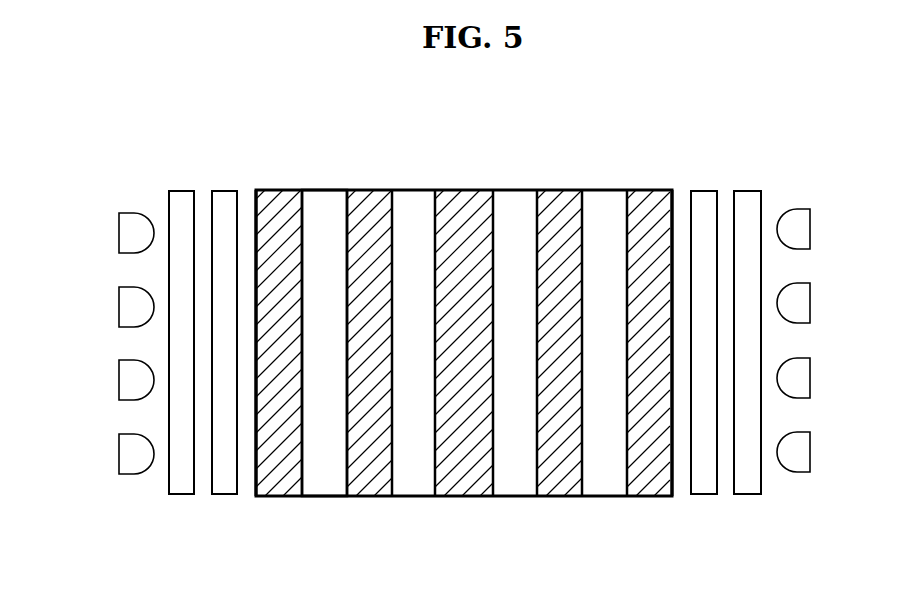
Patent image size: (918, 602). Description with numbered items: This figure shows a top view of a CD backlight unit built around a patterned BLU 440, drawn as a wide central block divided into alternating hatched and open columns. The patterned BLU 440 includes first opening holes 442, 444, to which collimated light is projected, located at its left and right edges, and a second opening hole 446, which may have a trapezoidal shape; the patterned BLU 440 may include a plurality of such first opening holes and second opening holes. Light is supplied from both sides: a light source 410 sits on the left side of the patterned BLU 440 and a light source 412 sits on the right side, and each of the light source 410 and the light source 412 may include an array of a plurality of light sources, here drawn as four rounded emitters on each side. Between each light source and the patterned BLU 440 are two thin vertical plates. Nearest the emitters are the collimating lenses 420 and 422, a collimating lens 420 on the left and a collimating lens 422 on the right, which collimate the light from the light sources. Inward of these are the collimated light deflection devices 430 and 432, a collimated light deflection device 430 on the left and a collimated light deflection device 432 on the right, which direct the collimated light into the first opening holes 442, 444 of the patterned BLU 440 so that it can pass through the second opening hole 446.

The light source 410 is at (119, 233).
The light source 412 is at (810, 228).
The collimating lens 420 is at (180, 495).
The collimated light deflection device 430 is at (223, 495).
The collimated light deflection device 432 is at (702, 495).
The collimating lens 422 is at (747, 495).
The patterned BLU 440 is at (322, 497).
The first opening hole 442 is at (256, 206).
The first opening hole 444 is at (672, 205).
The second opening hole 446 is at (328, 223).